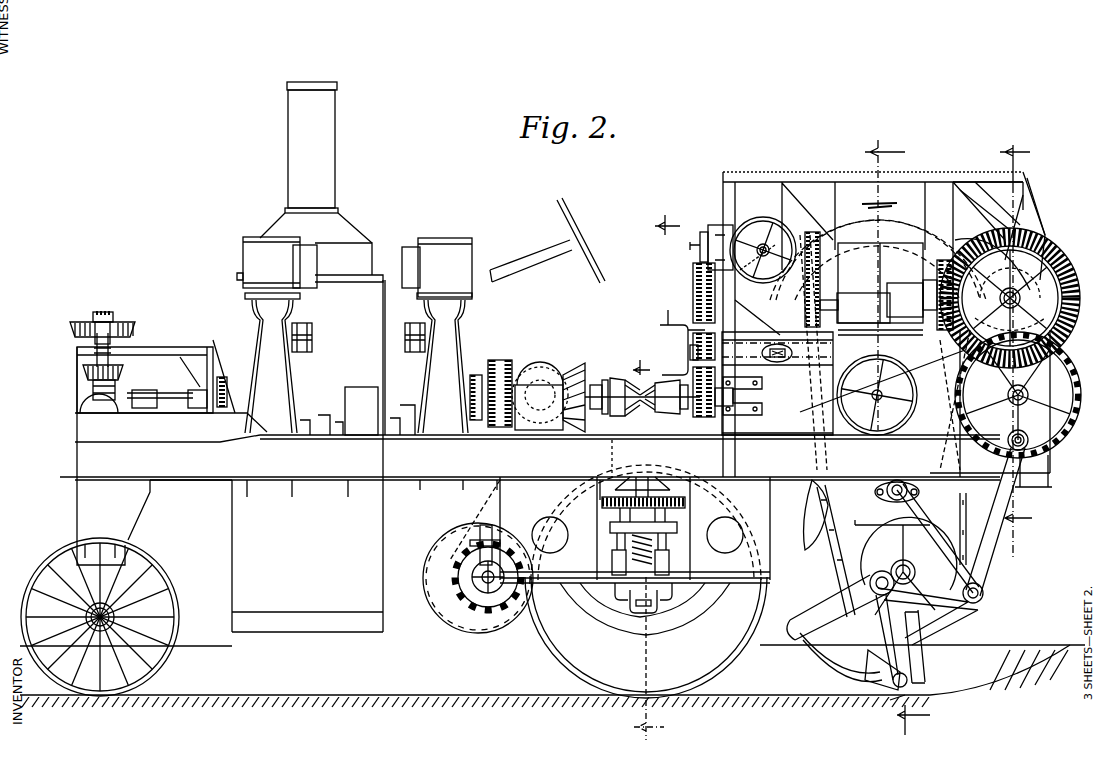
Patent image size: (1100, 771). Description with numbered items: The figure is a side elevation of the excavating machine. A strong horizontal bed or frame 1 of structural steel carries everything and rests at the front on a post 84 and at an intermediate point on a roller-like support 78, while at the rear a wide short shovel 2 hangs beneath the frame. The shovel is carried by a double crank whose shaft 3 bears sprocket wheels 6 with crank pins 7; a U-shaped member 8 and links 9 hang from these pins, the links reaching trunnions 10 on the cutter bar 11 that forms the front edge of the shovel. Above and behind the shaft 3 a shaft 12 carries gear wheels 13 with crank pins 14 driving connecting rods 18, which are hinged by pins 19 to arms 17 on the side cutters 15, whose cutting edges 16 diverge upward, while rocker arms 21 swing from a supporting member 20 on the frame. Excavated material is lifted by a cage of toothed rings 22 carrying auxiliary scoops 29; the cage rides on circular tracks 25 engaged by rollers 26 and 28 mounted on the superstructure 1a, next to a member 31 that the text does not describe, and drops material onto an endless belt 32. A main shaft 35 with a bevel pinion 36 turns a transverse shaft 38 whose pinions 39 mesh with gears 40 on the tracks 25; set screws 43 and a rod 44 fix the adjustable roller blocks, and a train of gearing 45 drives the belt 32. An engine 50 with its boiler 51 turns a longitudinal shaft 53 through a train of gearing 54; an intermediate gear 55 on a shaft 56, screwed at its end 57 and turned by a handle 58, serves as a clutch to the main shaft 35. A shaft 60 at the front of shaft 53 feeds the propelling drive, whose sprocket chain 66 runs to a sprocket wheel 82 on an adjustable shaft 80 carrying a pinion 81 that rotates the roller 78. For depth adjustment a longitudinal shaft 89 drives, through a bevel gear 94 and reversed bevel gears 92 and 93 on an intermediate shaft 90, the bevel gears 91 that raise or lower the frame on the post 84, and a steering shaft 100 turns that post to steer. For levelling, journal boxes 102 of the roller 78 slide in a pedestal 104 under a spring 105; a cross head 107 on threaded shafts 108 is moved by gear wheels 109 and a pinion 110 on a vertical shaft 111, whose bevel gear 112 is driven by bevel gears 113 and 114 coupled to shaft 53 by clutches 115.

The bed or frame 1 is at (397, 478).
The superstructure 1a is at (745, 180).
The shovel 2 is at (815, 658).
The shaft 3 is at (903, 560).
The sprocket wheels 6 is at (906, 566).
The crank pin 7 is at (878, 575).
The U-shaped member 8 is at (815, 610).
The arms or links 9 is at (935, 630).
The trunnions 10 is at (690, 232).
The cutter bar or shearing member 11 is at (1024, 341).
The horizontal shaft 12 is at (1028, 395).
The gear wheels 13 is at (991, 408).
The crank pins 14 is at (1022, 432).
The shoe 15 is at (865, 668).
The cutting edges 16 is at (940, 648).
The arms 17 is at (985, 600).
The connecting rods 18 is at (990, 550).
The pins 19 is at (982, 590).
The supporting member 20 is at (900, 482).
The rocker arm 21 is at (870, 435).
The sprocket wheels 22 is at (878, 251).
The ring-like members 25 is at (757, 262).
The roller 26 is at (798, 225).
The roller 28 is at (965, 225).
The auxiliary shovels or scoops 29 is at (805, 512).
The frame side 31 is at (1050, 235).
The endless belt 32 is at (855, 243).
The main shaft 35 is at (880, 307).
The bevel pinion 36 is at (935, 300).
The transverse horizontal shaft 38 is at (1010, 298).
The pinions 39 is at (952, 400).
The gear 40 is at (843, 383).
The set screws 43 is at (705, 228).
The rod or shaft 44 is at (762, 243).
The train of gearing 45 is at (838, 280).
The engine 50 is at (430, 365).
The boiler 51 is at (308, 456).
The horizontal longitudinally extending shaft 53 is at (632, 360).
The train of gearing 54 is at (500, 372).
The intermediate member 55 is at (683, 335).
The shaft 56 is at (688, 362).
The screw threaded end 57 is at (779, 362).
The handle 58 is at (668, 322).
The horizontal shaft 60 is at (545, 385).
The sprocket chain 66 is at (462, 505).
The intermediate roller-like support 78 is at (558, 650).
The horizontal adjustable shaft 80 is at (472, 580).
The pinion 81 is at (478, 562).
The sprocket wheel 82 is at (456, 615).
The post 84 is at (70, 575).
The longitudinal shaft 89 is at (172, 400).
The intermediate shaft 90 is at (93, 360).
The bevel gears 91 is at (122, 322).
The bevel gear 92 is at (115, 370).
The bevel gear 93 is at (78, 402).
The bevel gear 94 is at (130, 388).
The steering shaft 100 is at (512, 262).
The journal boxes 102 is at (640, 610).
The pedestal 104 is at (612, 560).
The spring 105 is at (640, 565).
The movable cross head 107 is at (642, 520).
The upright screw threaded shafts 108 is at (612, 540).
The gear wheel 109 is at (603, 502).
The pinion 110 is at (640, 500).
The vertical shaft 111 is at (672, 477).
The bevel gear 112 is at (640, 440).
The bevel gear 113 is at (617, 375).
The bevel gear 114 is at (664, 388).
The clutches 115 is at (596, 383).